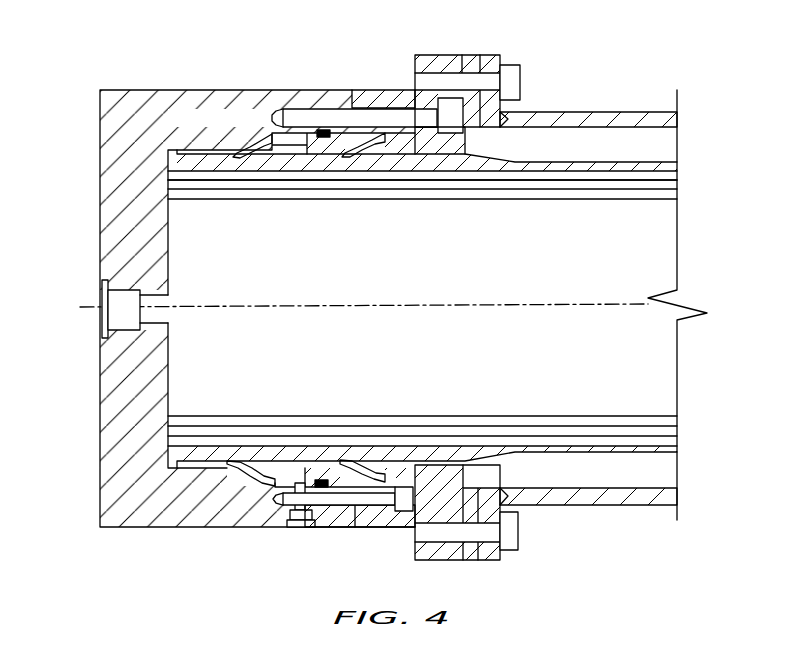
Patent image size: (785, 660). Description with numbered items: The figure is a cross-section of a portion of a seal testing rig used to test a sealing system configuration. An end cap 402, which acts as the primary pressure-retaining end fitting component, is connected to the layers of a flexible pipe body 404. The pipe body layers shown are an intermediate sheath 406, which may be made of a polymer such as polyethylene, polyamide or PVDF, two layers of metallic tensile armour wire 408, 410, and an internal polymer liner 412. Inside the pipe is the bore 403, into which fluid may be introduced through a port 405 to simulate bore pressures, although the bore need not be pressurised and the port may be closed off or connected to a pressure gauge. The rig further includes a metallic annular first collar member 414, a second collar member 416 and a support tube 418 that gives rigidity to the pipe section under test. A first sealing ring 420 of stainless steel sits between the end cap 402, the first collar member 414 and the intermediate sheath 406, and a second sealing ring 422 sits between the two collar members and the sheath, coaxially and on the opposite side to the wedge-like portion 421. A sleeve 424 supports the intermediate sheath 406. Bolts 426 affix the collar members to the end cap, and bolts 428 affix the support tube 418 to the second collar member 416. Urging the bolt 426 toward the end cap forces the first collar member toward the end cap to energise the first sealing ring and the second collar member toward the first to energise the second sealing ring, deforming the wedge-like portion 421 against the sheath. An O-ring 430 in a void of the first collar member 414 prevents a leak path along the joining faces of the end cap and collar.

The end cap 402 is at (134, 102).
The bore 403 is at (292, 363).
The flexible pipe body 404 is at (626, 212).
The port 405 is at (104, 291).
The intermediate sheath 406 is at (676, 162).
The metallic tensile armour wire layer 408 is at (676, 171).
The metallic tensile armour wire layer 410 is at (676, 180).
The internal polymer liner 412 is at (676, 198).
The first collar member 414 is at (364, 93).
The second collar member 416 is at (428, 55).
The support tube 418 is at (618, 112).
The first sealing ring 420 is at (297, 162).
The wedge-like portion 421 is at (254, 160).
The second sealing ring 422 is at (390, 160).
The sleeve 424 is at (207, 168).
The bolts 426 is at (392, 110).
The bolts 428 is at (514, 65).
The O-ring 430 is at (322, 126).